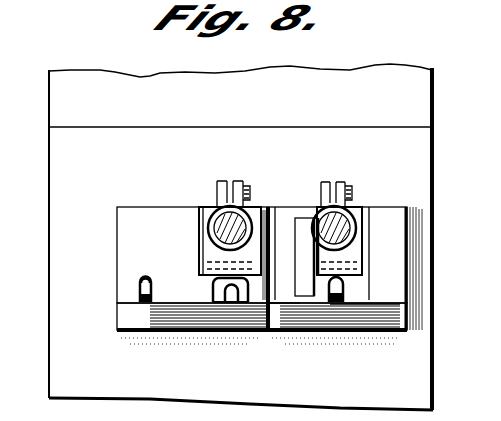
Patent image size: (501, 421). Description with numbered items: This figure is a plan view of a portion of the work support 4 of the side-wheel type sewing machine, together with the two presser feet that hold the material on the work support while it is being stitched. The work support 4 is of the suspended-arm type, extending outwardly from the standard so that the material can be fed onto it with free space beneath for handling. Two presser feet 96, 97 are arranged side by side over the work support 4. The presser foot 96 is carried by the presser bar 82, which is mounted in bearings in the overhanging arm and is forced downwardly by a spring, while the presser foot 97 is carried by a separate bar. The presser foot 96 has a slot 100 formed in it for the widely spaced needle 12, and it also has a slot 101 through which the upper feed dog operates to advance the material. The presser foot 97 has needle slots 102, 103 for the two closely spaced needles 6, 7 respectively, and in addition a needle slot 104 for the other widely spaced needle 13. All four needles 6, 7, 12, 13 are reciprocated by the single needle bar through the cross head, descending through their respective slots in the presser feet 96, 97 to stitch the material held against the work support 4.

The work support 4 is at (241, 237).
The needle 6 is at (219, 303).
The needle 7 is at (247, 303).
The needle 12 is at (338, 300).
The needle 13 is at (139, 298).
The presser bar 82 is at (344, 231).
The presser foot 96 is at (402, 258).
The presser foot 97 is at (210, 251).
The slot 100 is at (345, 289).
The slot 101 is at (303, 228).
The needle slot 102 is at (210, 288).
The needle slot 103 is at (273, 304).
The needle slot 104 is at (139, 284).